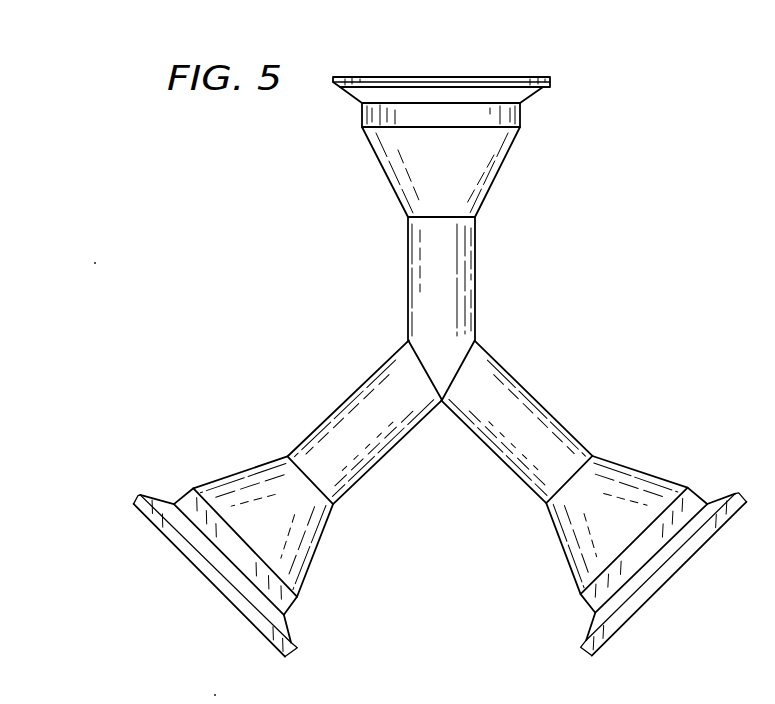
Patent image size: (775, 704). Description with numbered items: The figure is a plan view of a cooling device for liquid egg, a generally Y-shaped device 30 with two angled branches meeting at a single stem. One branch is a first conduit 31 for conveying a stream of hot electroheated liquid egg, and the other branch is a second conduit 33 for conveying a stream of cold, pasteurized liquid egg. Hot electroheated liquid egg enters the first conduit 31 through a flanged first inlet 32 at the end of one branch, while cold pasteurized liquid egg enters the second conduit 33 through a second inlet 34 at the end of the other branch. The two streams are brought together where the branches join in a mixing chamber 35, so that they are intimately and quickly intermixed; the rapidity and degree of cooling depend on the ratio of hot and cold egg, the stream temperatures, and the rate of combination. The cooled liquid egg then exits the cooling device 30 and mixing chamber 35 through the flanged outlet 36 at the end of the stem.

The Y-shaped device 30 is at (612, 269).
The first conduit 31 is at (338, 398).
The first inlet 32 is at (207, 580).
The second conduit 33 is at (523, 388).
The second inlet 34 is at (673, 577).
The mixing chamber 35 is at (477, 280).
The outlet 36 is at (452, 77).